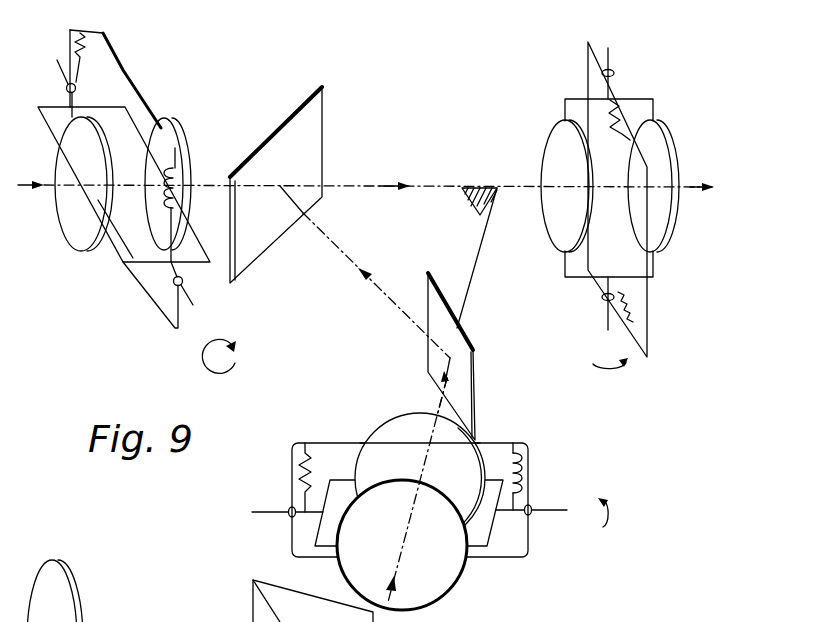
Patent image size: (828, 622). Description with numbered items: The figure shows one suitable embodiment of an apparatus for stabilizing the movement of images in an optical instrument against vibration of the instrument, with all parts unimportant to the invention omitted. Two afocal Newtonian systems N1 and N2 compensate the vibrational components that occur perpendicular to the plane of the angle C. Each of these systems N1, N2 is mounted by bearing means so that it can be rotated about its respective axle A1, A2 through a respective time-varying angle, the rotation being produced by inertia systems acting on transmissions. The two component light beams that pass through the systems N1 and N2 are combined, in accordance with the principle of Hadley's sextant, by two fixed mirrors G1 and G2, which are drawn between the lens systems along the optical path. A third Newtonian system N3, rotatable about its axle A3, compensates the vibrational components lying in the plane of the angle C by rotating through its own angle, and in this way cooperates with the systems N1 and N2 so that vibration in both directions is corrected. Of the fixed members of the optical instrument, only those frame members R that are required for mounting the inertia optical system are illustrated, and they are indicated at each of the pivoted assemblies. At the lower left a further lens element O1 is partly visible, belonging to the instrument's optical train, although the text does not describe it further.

The afocal Newtonian system N1 is at (218, 147).
The afocal Newtonian system N2 is at (398, 392).
The third Newtonian system N3 is at (635, 67).
The axle A1 is at (204, 341).
The axle A2 is at (407, 514).
The axle A3 is at (611, 191).
The fixed mirror G1 is at (295, 185).
The fixed mirror G2 is at (471, 356).
The angle C is at (463, 258).
The frame member R is at (123, 70).
The objective lens O1 is at (68, 591).